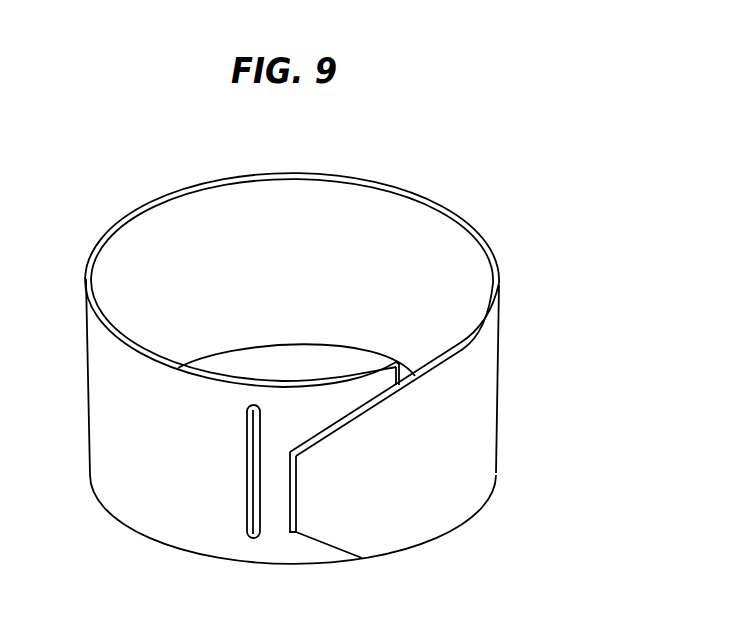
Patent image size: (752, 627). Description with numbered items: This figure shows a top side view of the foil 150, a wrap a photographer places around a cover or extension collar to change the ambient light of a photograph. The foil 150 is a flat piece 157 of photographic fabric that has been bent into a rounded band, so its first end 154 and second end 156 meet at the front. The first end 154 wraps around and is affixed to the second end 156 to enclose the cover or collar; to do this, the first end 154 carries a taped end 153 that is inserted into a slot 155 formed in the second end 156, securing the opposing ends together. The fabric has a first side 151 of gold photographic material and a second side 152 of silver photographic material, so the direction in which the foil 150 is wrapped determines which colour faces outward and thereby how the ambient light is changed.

The foil 150 is at (537, 273).
The first side 151 is at (262, 211).
The second side 152 is at (150, 452).
The taped end 153 is at (297, 502).
The first end 154 is at (377, 508).
The slot 155 is at (253, 497).
The second end 156 is at (393, 360).
The flat piece 157 is at (480, 333).